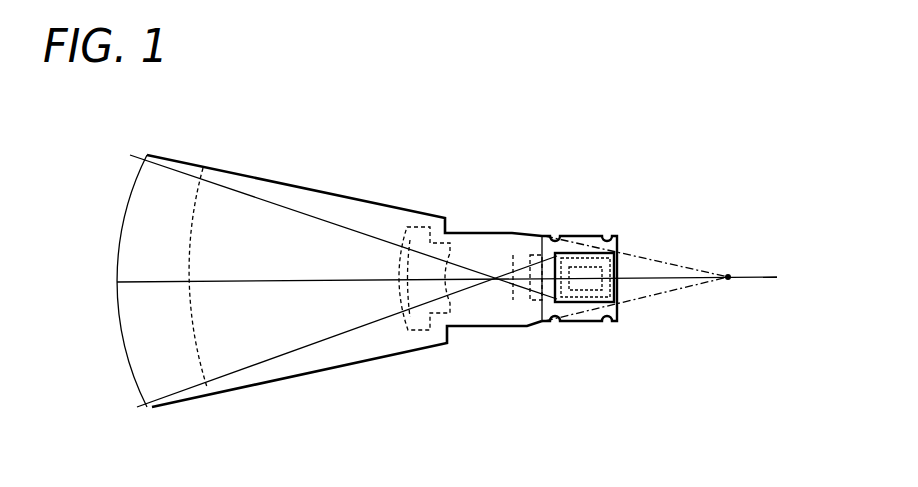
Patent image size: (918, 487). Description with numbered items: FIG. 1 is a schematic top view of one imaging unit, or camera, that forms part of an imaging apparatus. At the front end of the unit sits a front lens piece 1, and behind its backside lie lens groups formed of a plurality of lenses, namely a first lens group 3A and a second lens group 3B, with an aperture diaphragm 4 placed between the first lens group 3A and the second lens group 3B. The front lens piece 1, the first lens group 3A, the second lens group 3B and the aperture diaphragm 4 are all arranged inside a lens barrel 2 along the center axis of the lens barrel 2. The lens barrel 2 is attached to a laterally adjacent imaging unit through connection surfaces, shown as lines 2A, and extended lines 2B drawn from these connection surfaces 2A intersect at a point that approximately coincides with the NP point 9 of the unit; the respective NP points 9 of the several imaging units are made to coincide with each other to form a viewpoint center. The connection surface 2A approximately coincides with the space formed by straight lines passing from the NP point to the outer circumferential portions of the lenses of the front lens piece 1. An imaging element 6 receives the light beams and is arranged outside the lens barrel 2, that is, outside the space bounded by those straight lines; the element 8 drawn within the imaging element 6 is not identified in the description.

The front lens piece 1 is at (162, 347).
The lens barrel 2 is at (344, 274).
The connection surfaces 2A is at (328, 191).
The extended lines 2B is at (691, 277).
The first lens group 3A is at (455, 312).
The second lens group 3B is at (541, 308).
The aperture diaphragm 4 is at (512, 297).
The imaging element 6 is at (579, 267).
The imaging surface 8 is at (579, 290).
The NP point 9 is at (728, 280).